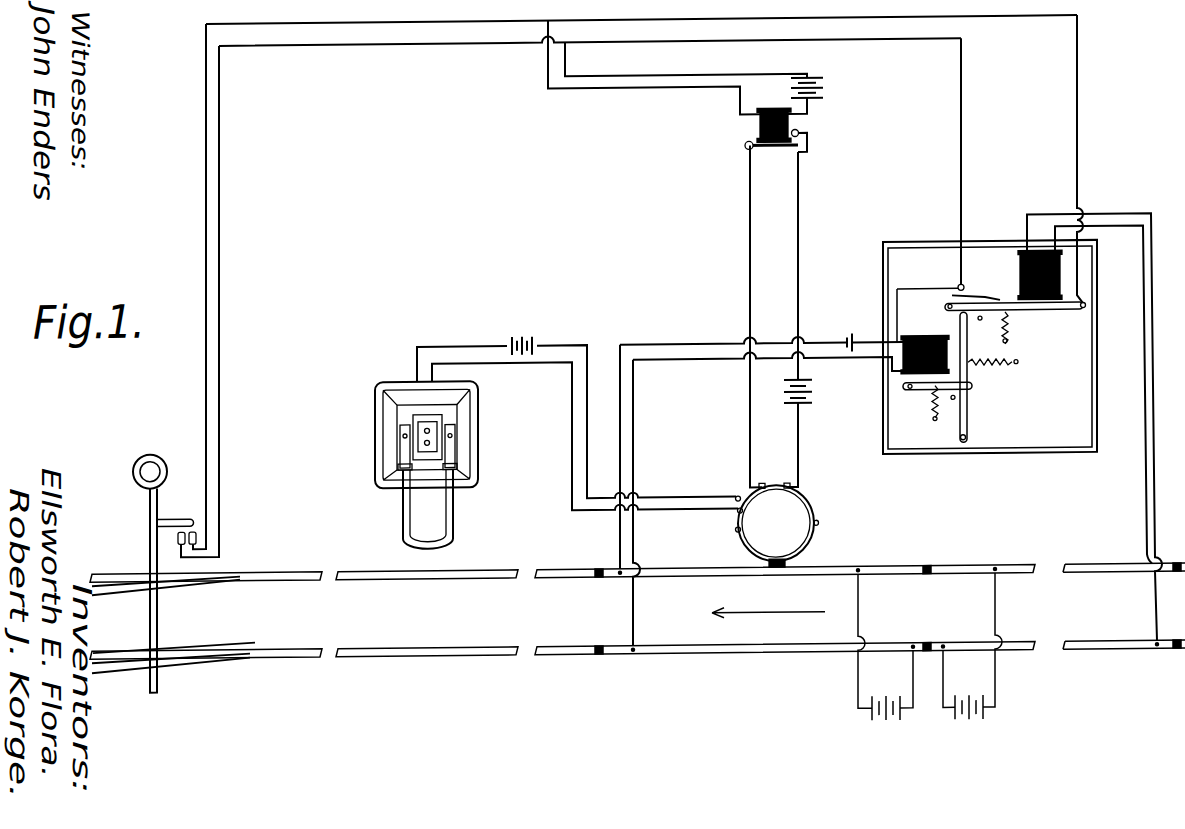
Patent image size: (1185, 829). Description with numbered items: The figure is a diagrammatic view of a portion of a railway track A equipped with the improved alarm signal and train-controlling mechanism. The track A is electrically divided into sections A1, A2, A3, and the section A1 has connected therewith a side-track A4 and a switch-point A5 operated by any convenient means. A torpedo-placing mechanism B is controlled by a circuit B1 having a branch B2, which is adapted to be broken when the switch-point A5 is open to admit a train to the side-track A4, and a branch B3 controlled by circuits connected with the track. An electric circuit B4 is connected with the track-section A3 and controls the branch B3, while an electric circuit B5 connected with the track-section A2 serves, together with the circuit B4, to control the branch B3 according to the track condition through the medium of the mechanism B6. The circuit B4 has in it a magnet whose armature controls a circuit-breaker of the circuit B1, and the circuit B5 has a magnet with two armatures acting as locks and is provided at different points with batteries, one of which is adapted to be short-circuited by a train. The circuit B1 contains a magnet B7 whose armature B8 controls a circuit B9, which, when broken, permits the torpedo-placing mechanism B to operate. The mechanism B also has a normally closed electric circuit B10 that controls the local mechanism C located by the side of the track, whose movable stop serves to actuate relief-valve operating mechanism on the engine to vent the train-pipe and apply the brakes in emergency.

The railway track A is at (637, 645).
The track section A1 is at (427, 613).
The track section A2 is at (785, 611).
The track section A3 is at (1085, 572).
The side-track A4 is at (130, 685).
The switch-point A5 is at (203, 648).
The torpedo-placing mechanism B is at (812, 513).
The circuit B1 is at (641, 76).
The branch circuit B2 is at (233, 290).
The branch circuit B3 is at (849, 71).
The electric circuit B4 is at (1094, 427).
The electric circuit B5 is at (733, 320).
The mechanism B6 is at (990, 320).
The magnet B7 is at (758, 124).
The armature B8 is at (770, 150).
The circuit B9 is at (750, 231).
The electric circuit B10 is at (570, 473).
The local mechanism C is at (397, 465).